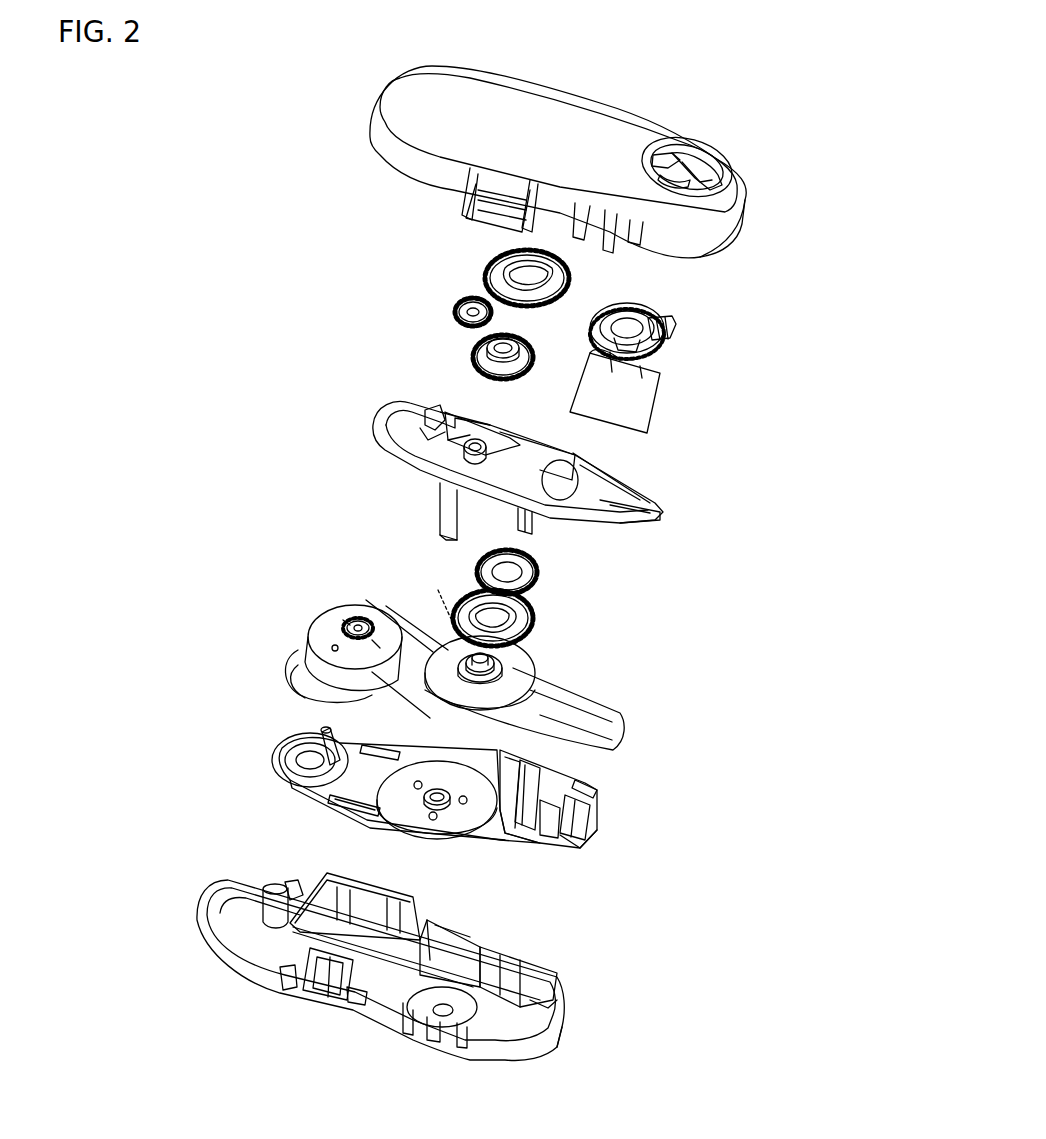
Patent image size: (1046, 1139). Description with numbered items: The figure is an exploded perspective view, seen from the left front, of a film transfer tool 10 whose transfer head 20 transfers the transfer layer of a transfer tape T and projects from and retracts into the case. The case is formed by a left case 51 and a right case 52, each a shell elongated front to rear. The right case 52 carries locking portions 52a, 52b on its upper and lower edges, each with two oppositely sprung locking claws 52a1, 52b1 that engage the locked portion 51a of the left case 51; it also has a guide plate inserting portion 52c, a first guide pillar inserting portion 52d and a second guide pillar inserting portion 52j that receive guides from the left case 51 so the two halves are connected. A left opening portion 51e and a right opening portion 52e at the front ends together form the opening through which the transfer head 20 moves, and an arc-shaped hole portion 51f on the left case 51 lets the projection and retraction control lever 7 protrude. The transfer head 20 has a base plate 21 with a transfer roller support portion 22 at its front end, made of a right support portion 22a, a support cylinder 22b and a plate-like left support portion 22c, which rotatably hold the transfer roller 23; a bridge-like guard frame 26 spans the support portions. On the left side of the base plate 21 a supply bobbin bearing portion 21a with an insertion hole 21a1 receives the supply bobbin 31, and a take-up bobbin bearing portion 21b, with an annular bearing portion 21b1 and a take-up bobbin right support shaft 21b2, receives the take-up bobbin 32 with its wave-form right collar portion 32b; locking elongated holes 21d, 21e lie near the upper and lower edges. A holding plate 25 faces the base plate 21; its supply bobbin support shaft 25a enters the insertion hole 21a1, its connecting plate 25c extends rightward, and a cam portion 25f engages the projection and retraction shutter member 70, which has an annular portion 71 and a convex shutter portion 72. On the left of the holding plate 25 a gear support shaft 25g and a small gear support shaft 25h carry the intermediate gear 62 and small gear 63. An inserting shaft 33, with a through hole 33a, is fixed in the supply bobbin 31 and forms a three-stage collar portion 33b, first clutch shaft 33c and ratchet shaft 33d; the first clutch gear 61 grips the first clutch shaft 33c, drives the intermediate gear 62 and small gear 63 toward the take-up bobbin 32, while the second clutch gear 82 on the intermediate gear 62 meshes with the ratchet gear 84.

The film transfer tool 10 is at (748, 468).
The transfer head 20 is at (427, 802).
The base plate 21 is at (363, 783).
The supply bobbin bearing portion 21a is at (420, 818).
The insertion hole 21a1 is at (430, 813).
The take-up bobbin bearing portion 21b is at (289, 738).
The annular bearing portion 21b1 is at (287, 757).
The take-up bobbin right support shaft 21b2 is at (318, 757).
The locking elongated hole 21d is at (337, 807).
The locking elongated hole 21e is at (356, 732).
The transfer roller support portion 22 is at (561, 837).
The right support portion 22a is at (567, 843).
The support cylinder 22b is at (527, 820).
The left support portion 22c is at (590, 788).
The transfer roller 23 is at (593, 817).
The holding plate 25 is at (541, 465).
The supply bobbin support shaft 25a is at (530, 522).
The connecting plate 25c is at (440, 510).
The cam portion 25f is at (650, 503).
The gear support shaft 25g is at (486, 445).
The small gear support shaft 25h is at (430, 404).
The guard frame 26 is at (547, 840).
The supply bobbin 31 is at (437, 655).
The take-up bobbin 32 is at (308, 639).
The right collar portion 32b is at (320, 632).
The inserting shaft 33 is at (513, 631).
The through hole 33a is at (470, 653).
The collar portion 33b is at (502, 675).
The first clutch shaft 33c is at (500, 667).
The ratchet shaft 33d is at (492, 660).
The left case 51 is at (557, 141).
The locked portion 51a is at (462, 218).
The left opening portion 51e is at (748, 212).
The arc-shaped hole portion 51f is at (712, 182).
The right case 52 is at (364, 968).
The locking portion 52a is at (323, 985).
The locking claw 52a1 is at (347, 1000).
The locking portion 52b is at (323, 880).
The locking claw 52b1 is at (430, 923).
The guide plate inserting portion 52c is at (500, 977).
The first guide pillar inserting portion 52d is at (265, 900).
The right opening portion 52e is at (567, 1010).
The second guide pillar inserting portion 52j is at (443, 1017).
The first clutch gear 61 is at (537, 620).
The intermediate gear 62 is at (476, 350).
The small gear 63 is at (458, 302).
The projection and retraction control lever 7 is at (668, 337).
The projection and retraction shutter member 70 is at (648, 350).
The annular portion 71 is at (643, 313).
The shutter portion 72 is at (642, 403).
The second clutch gear 82 is at (560, 280).
The ratchet gear 84 is at (537, 577).
The transfer tape T is at (603, 733).